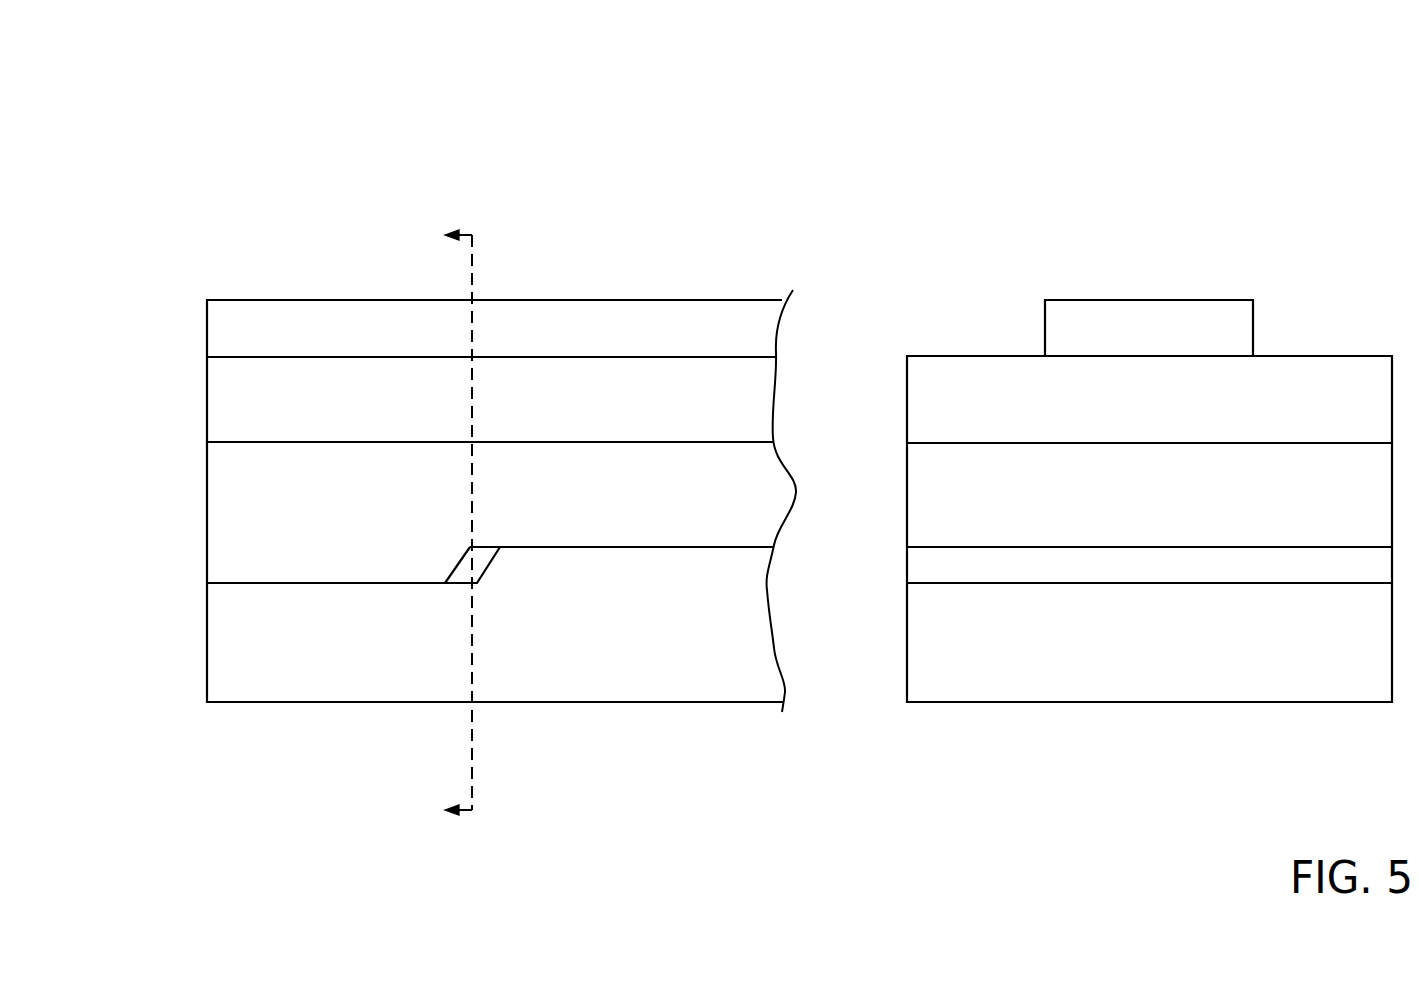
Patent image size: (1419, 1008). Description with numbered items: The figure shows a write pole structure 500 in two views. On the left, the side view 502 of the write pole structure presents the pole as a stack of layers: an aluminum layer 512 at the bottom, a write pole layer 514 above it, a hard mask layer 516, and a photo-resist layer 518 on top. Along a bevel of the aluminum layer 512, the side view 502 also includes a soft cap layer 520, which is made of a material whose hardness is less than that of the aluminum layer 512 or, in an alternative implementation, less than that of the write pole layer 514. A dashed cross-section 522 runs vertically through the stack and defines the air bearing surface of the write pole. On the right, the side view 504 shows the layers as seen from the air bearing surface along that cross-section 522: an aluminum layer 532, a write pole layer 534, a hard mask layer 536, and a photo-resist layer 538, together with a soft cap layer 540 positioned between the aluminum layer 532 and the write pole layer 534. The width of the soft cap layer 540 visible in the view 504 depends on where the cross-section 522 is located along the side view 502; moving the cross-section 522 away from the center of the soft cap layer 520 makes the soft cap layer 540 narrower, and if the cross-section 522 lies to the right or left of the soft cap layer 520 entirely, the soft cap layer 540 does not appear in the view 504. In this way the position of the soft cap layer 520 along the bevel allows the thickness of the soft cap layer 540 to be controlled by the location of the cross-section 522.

The write pole structure 500 is at (266, 82).
The side view of the write pole structure 502 is at (352, 870).
The air bearing surface view of the pole structure 504 is at (1045, 835).
The aluminum layer 512 is at (207, 670).
The write pole layer 514 is at (207, 547).
The hard mask layer 516 is at (207, 392).
The photo-resist layer 518 is at (207, 322).
The soft cap layer 520 is at (448, 559).
The cross-section 522 is at (462, 758).
The aluminum layer 532 is at (907, 635).
The write pole layer 534 is at (907, 495).
The hard mask layer 536 is at (907, 392).
The photo-resist layer 538 is at (1045, 323).
The soft cap layer 540 is at (907, 565).